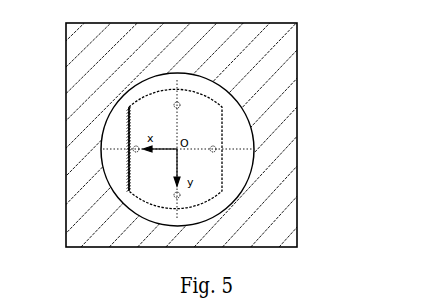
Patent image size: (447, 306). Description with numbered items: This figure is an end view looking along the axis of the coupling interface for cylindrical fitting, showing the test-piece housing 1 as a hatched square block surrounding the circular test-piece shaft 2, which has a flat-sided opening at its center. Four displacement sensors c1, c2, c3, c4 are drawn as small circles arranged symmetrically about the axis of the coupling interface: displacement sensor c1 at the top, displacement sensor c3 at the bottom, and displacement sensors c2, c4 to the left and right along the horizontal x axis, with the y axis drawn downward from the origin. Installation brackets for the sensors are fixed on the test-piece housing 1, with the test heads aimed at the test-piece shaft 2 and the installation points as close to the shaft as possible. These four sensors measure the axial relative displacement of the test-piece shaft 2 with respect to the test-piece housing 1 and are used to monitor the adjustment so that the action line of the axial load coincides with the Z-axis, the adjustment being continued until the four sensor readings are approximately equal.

The test-piece housing 1 is at (297, 67).
The test-piece shaft 2 is at (222, 118).
The displacement sensor c1 is at (182, 92).
The displacement sensor c2 is at (123, 144).
The displacement sensor c3 is at (182, 210).
The displacement sensor c4 is at (225, 144).